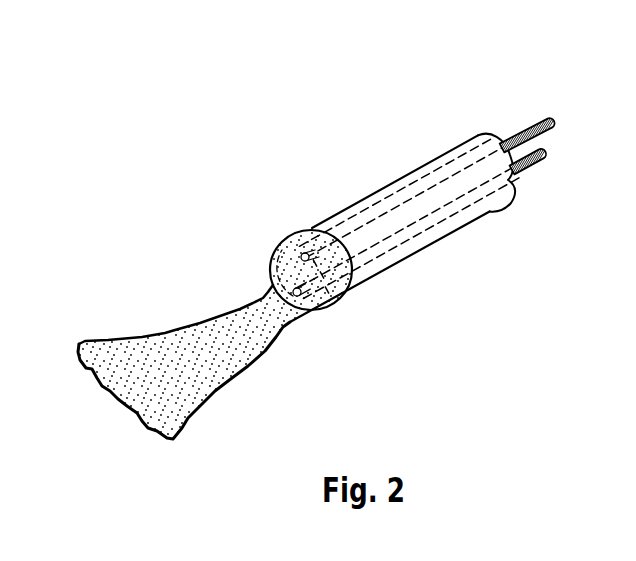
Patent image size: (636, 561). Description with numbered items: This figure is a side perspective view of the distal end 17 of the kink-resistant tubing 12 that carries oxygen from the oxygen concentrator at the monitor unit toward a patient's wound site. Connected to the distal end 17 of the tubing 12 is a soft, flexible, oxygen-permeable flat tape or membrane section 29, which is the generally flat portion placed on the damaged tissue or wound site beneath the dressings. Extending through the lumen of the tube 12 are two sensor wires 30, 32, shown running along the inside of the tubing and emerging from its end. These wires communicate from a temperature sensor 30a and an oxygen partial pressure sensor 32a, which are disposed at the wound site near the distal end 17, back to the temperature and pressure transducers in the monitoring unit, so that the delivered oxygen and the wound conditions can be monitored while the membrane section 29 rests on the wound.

The tubing 12 is at (398, 178).
The distal end 17 is at (298, 228).
The tape or membrane section 29 is at (132, 356).
The sensor wire 30 is at (528, 128).
The sensor wire 32 is at (538, 162).
The temperature sensor 30a is at (274, 264).
The oxygen partial pressure sensor 32a is at (292, 304).